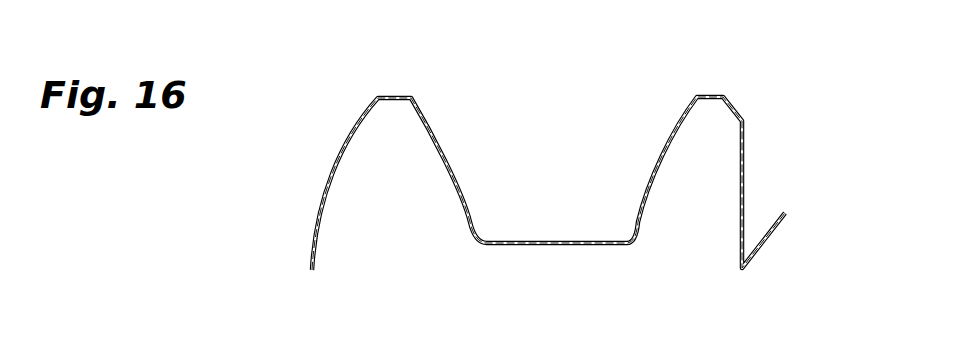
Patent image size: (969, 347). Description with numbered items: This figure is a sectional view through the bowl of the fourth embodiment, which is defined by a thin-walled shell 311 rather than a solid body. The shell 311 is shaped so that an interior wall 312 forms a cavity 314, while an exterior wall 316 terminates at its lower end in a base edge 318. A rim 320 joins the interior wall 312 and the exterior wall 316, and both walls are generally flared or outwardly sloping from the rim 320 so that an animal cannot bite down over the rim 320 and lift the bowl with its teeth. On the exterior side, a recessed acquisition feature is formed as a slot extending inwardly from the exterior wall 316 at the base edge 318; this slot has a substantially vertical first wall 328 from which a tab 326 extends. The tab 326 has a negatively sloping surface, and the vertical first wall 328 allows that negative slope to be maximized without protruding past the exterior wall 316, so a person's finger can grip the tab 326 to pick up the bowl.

The thin-walled shell 311 is at (318, 217).
The interior wall 312 is at (423, 110).
The cavity 314 is at (571, 195).
The exterior wall 316 is at (360, 132).
The base edge 318 is at (308, 270).
The rim 320 is at (707, 95).
The tab 326 is at (768, 233).
The first wall 328 is at (743, 152).